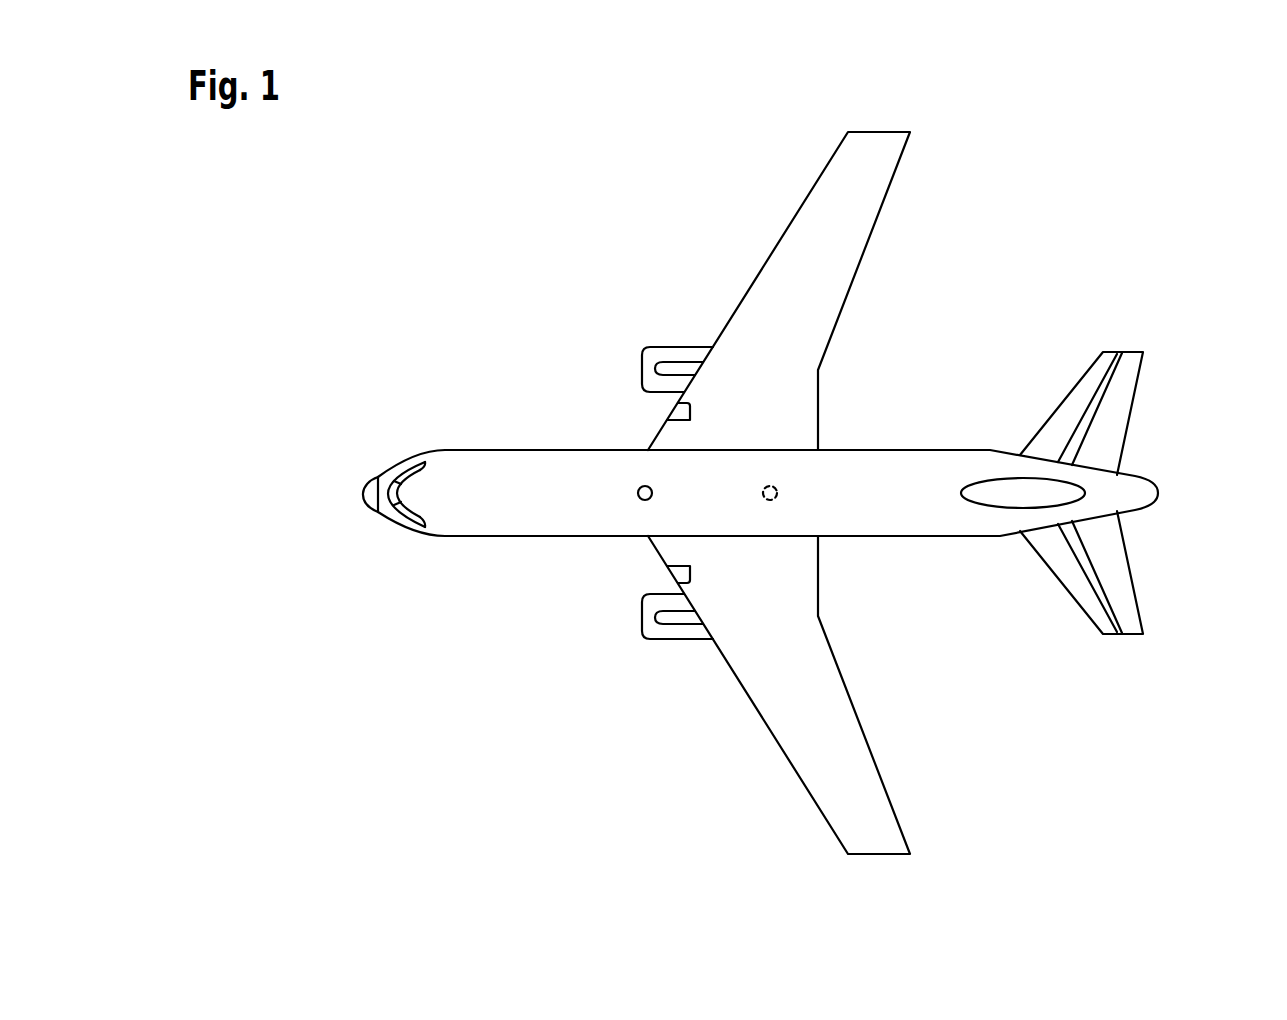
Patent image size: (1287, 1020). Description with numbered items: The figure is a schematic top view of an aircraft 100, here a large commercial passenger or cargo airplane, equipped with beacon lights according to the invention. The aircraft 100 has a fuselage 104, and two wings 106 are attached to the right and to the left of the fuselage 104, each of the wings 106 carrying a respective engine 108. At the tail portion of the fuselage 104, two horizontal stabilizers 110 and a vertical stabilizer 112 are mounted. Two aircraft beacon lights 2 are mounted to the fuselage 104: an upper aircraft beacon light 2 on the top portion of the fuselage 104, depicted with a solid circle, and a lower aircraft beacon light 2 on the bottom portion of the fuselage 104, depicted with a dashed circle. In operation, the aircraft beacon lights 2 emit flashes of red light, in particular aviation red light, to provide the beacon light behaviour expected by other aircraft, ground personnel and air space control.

The aircraft 100 is at (1040, 206).
The fuselage 104 is at (890, 523).
The wings 106 is at (802, 228).
The engine 108 is at (628, 357).
The horizontal stabilizers 110 is at (1117, 410).
The vertical stabilizer 112 is at (993, 500).
The aircraft beacon light 2 is at (637, 493).